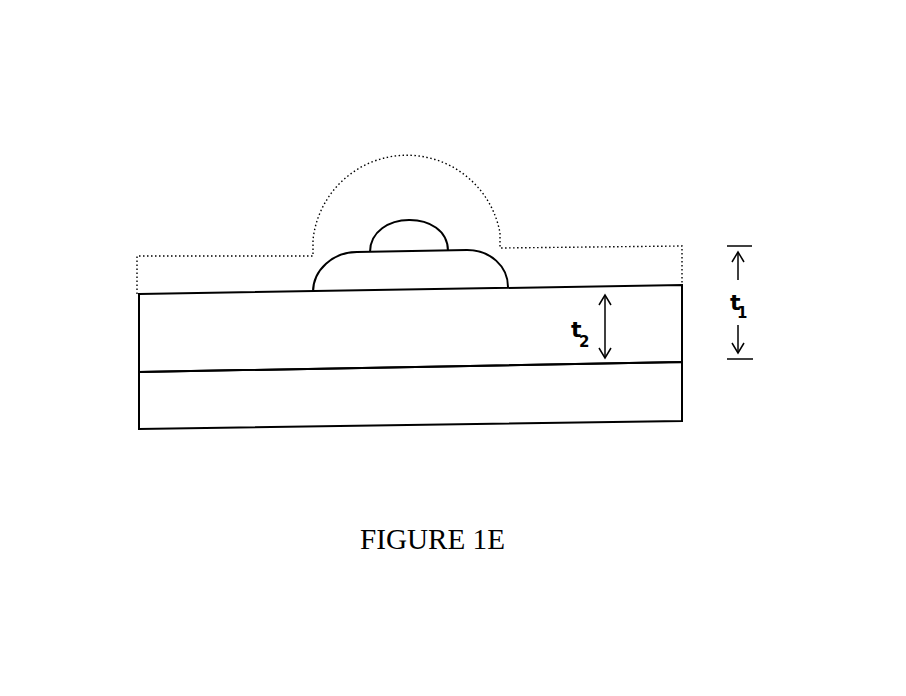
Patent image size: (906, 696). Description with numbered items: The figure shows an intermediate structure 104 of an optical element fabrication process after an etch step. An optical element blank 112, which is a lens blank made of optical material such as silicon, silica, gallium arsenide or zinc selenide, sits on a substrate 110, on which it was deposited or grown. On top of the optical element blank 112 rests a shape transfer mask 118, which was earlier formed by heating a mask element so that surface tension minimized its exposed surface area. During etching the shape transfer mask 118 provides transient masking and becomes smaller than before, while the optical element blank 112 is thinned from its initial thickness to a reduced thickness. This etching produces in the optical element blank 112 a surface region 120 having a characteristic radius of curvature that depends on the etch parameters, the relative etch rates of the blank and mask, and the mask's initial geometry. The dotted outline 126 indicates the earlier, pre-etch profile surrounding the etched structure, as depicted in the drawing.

The intermediate structure 104 is at (68, 42).
The substrate 110 is at (148, 411).
The optical element blank 112 is at (148, 329).
The shape transfer mask 118 is at (420, 228).
The surface region 120 is at (338, 265).
The dotted outline of lens region 126 is at (450, 165).